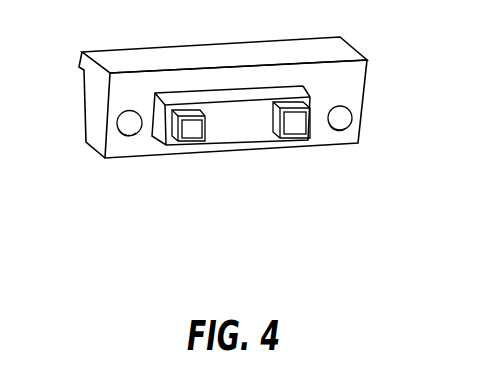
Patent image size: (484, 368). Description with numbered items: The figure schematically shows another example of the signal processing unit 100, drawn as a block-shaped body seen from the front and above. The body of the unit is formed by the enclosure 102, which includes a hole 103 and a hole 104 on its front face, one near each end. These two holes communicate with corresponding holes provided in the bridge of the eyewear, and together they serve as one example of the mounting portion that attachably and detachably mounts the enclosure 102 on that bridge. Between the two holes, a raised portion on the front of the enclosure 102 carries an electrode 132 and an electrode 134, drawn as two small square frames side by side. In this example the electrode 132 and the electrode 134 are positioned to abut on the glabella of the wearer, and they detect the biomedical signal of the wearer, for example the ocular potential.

The signal processing unit 100 is at (133, 40).
The enclosure 102 is at (366, 78).
The hole 103 is at (112, 121).
The hole 104 is at (366, 118).
The electrode 132 is at (190, 143).
The electrode 134 is at (292, 141).